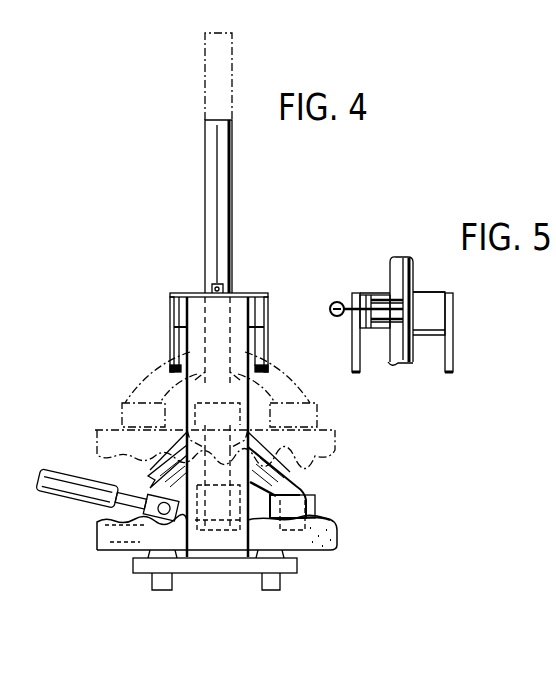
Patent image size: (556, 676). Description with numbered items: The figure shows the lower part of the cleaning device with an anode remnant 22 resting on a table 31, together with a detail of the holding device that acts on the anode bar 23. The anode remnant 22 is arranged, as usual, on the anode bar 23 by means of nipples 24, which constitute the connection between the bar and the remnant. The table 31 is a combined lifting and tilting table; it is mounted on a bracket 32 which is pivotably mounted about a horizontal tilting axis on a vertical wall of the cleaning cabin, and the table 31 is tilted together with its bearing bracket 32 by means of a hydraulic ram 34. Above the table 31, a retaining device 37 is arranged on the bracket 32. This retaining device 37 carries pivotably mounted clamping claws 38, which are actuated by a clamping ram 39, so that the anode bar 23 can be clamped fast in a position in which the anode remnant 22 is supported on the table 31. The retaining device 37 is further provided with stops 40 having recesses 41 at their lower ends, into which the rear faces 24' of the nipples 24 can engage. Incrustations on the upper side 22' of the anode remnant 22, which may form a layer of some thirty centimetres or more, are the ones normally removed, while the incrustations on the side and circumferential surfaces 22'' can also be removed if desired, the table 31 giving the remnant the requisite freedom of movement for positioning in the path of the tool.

In FIG. 4, the anode bar 23 is at (218, 224).
In FIG. 5, the anode bar 23 is at (413, 273).
In FIG. 4, the retaining device 37 is at (274, 300).
In FIG. 5, the retaining device 37 is at (355, 291).
In FIG. 4, the stops 40 is at (172, 332).
In FIG. 5, the stops 40 is at (353, 340).
In FIG. 4, the recesses 41 is at (176, 368).
In FIG. 5, the recesses 41 is at (454, 368).
In FIG. 4, the rear faces of the nipples 24' is at (233, 416).
In FIG. 4, the bracket 32 is at (245, 418).
In FIG. 4, the nipples 24 is at (264, 521).
In FIG. 4, the hydraulic ram 34 is at (56, 498).
In FIG. 4, the anode remnant 22 is at (193, 539).
In FIG. 4, the upper side of the anode remnant 22' is at (351, 521).
In FIG. 4, the side and circumferential surfaces of the anode remnant 22'' is at (355, 544).
In FIG. 4, the table 31 is at (290, 565).
In FIG. 5, the clamping claws 38 is at (415, 338).
In FIG. 5, the clamping ram 39 is at (330, 310).